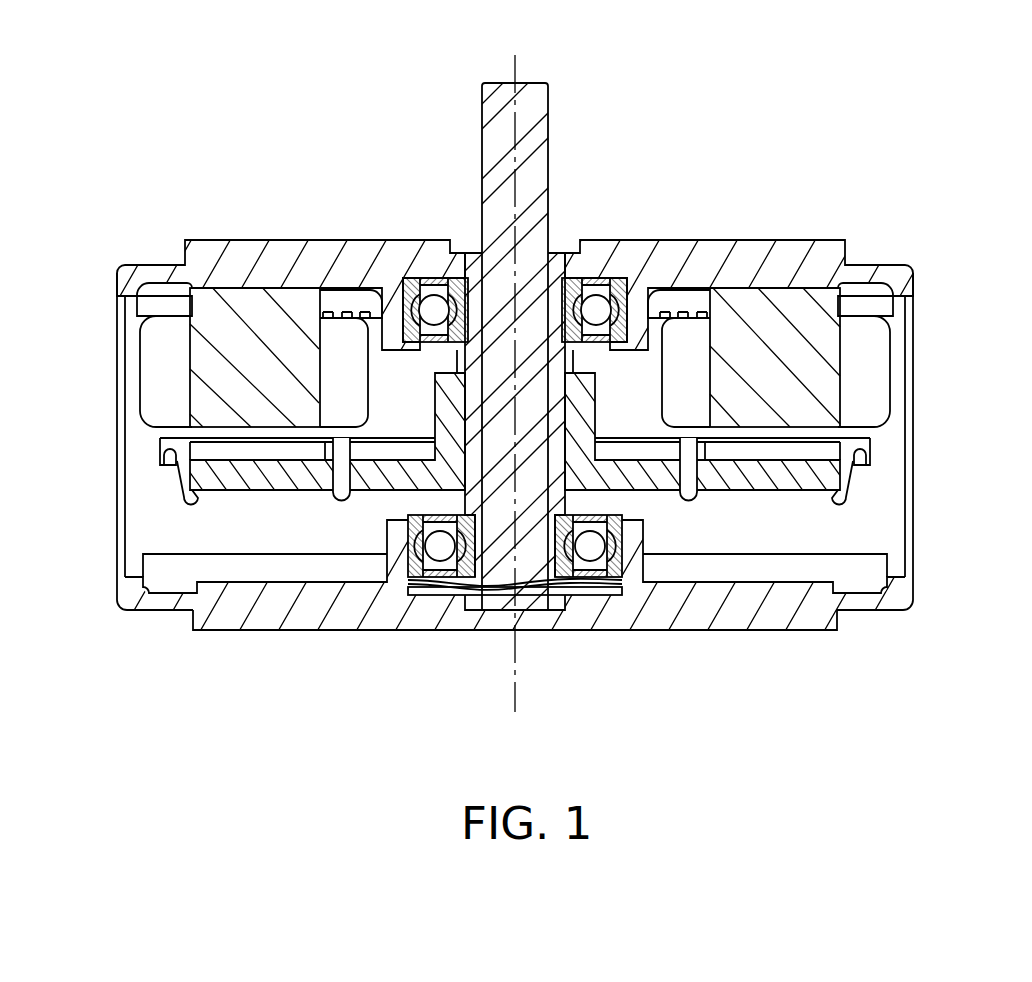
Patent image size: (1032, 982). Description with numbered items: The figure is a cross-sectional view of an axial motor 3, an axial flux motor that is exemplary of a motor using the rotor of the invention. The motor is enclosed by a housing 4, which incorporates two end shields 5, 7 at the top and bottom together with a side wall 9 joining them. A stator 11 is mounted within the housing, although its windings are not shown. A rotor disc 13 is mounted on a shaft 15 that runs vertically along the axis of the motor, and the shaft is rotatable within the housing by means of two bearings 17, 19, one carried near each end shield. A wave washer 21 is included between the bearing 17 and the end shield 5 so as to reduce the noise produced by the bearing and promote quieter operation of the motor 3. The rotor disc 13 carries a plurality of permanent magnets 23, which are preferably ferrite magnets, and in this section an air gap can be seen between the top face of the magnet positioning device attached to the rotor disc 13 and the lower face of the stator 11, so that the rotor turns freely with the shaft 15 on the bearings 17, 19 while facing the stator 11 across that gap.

The axial motor 3 is at (806, 98).
The housing 4 is at (936, 210).
The end shield 5 is at (815, 250).
The end shield 7 is at (822, 625).
The side wall 9 is at (117, 552).
The stator 11 is at (935, 360).
The rotor disc 13 is at (763, 473).
The shaft 15 is at (548, 150).
The bearing 17 is at (421, 280).
The bearing 19 is at (405, 560).
The wave washer 21 is at (585, 590).
The permanent magnets 23 is at (833, 447).